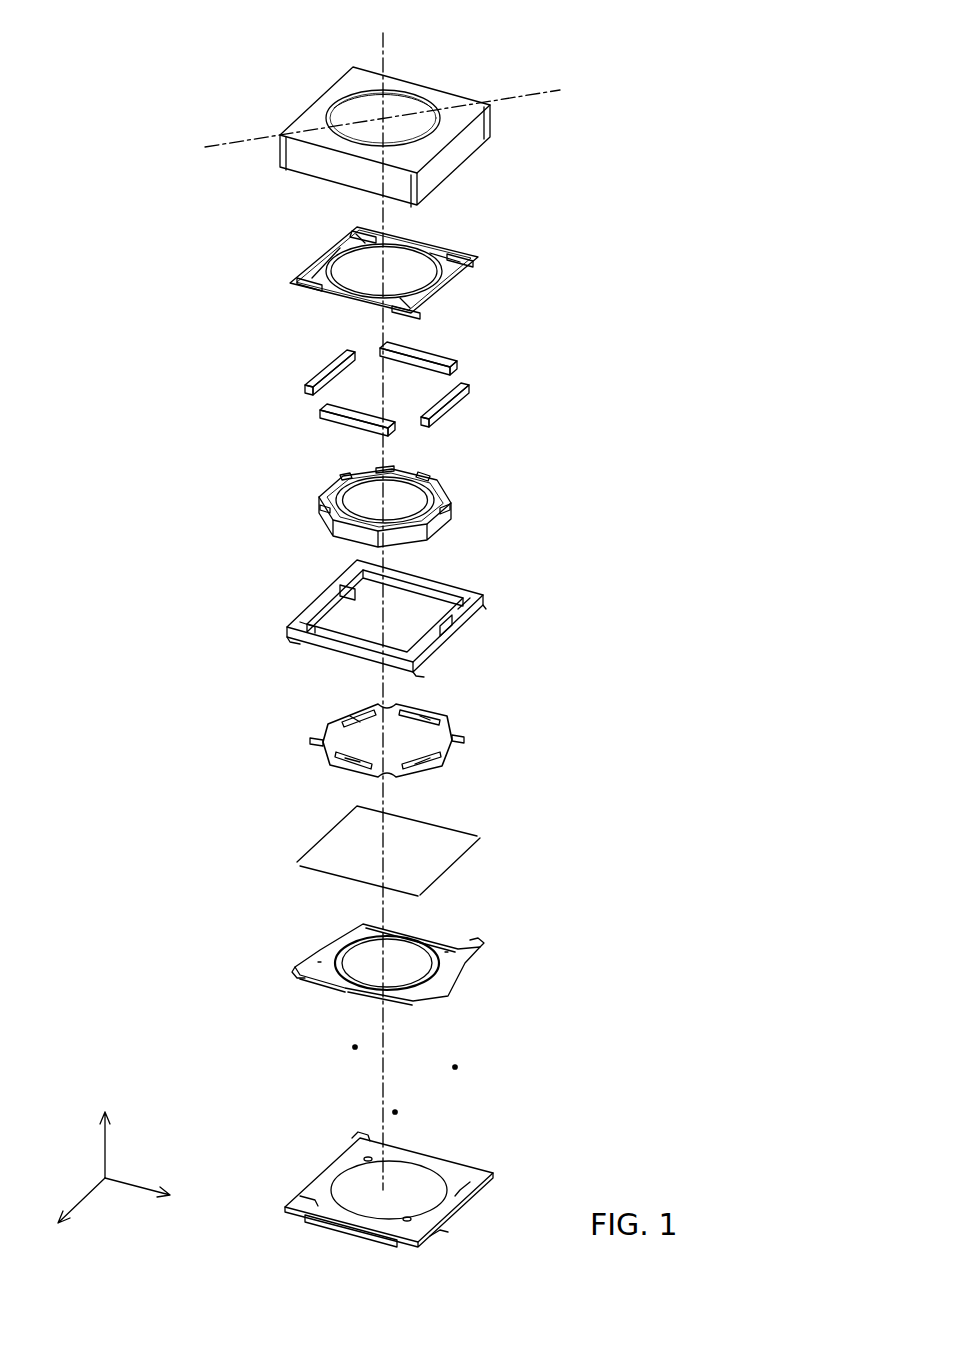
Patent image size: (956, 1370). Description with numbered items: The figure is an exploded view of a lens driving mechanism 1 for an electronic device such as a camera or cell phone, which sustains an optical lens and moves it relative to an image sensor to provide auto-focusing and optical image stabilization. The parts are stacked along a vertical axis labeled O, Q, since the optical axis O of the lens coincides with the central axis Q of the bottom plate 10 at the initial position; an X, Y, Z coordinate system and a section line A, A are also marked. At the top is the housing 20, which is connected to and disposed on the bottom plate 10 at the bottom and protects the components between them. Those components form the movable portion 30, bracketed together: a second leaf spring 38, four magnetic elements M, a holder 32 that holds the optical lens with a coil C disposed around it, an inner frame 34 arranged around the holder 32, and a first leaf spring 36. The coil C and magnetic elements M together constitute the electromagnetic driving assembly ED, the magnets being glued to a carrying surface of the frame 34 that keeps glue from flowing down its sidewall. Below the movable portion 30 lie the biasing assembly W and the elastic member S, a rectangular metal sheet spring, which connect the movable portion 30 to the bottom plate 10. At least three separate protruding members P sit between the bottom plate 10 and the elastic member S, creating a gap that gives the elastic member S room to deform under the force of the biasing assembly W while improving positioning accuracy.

The lens driving mechanism 1 is at (107, 29).
The bottom plate 10 is at (300, 1200).
The housing 20 is at (455, 155).
The movable portion 30 is at (568, 296).
The holder 32 is at (447, 493).
The frame 34 is at (448, 633).
The first leaf spring 36 is at (462, 733).
The second leaf spring 38 is at (447, 287).
The magnetic element M is at (473, 418).
The coil C is at (443, 510).
The electromagnetic driving assembly ED is at (155, 415).
The biasing assembly W is at (476, 871).
The elastic member S is at (463, 968).
The protruding member P is at (353, 1047).
The section line A- A is at (225, 131).
The optical axis O is at (383, 595).
The central axis Q is at (383, 595).
The X axis X is at (112, 1161).
The Y axis Y is at (112, 1161).
The Z axis Z is at (112, 1161).